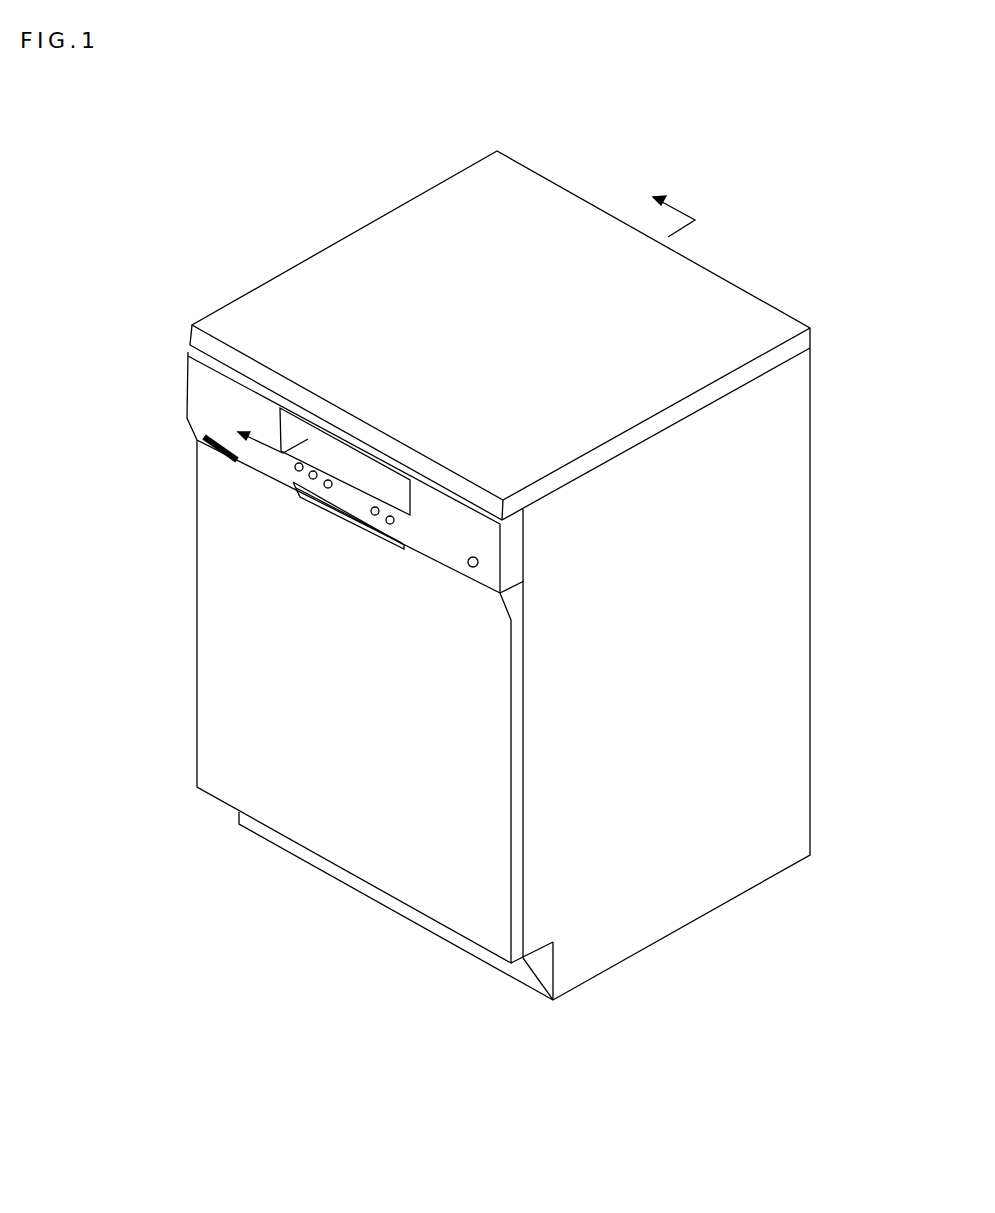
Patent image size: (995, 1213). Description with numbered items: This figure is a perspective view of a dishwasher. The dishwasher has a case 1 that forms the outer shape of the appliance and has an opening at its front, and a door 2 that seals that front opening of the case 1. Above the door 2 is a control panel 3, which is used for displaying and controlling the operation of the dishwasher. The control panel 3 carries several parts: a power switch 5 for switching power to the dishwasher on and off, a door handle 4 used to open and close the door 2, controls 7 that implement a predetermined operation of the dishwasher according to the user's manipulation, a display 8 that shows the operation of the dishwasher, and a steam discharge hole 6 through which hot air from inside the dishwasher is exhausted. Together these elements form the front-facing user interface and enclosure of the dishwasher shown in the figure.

The case 1 is at (775, 520).
The door 2 is at (303, 813).
The control panel 3 is at (200, 393).
The door handle 4 is at (322, 507).
The power switch 5 is at (478, 567).
The steam discharge hole 6 is at (202, 449).
The controls 7 is at (361, 509).
The display 8 is at (357, 463).